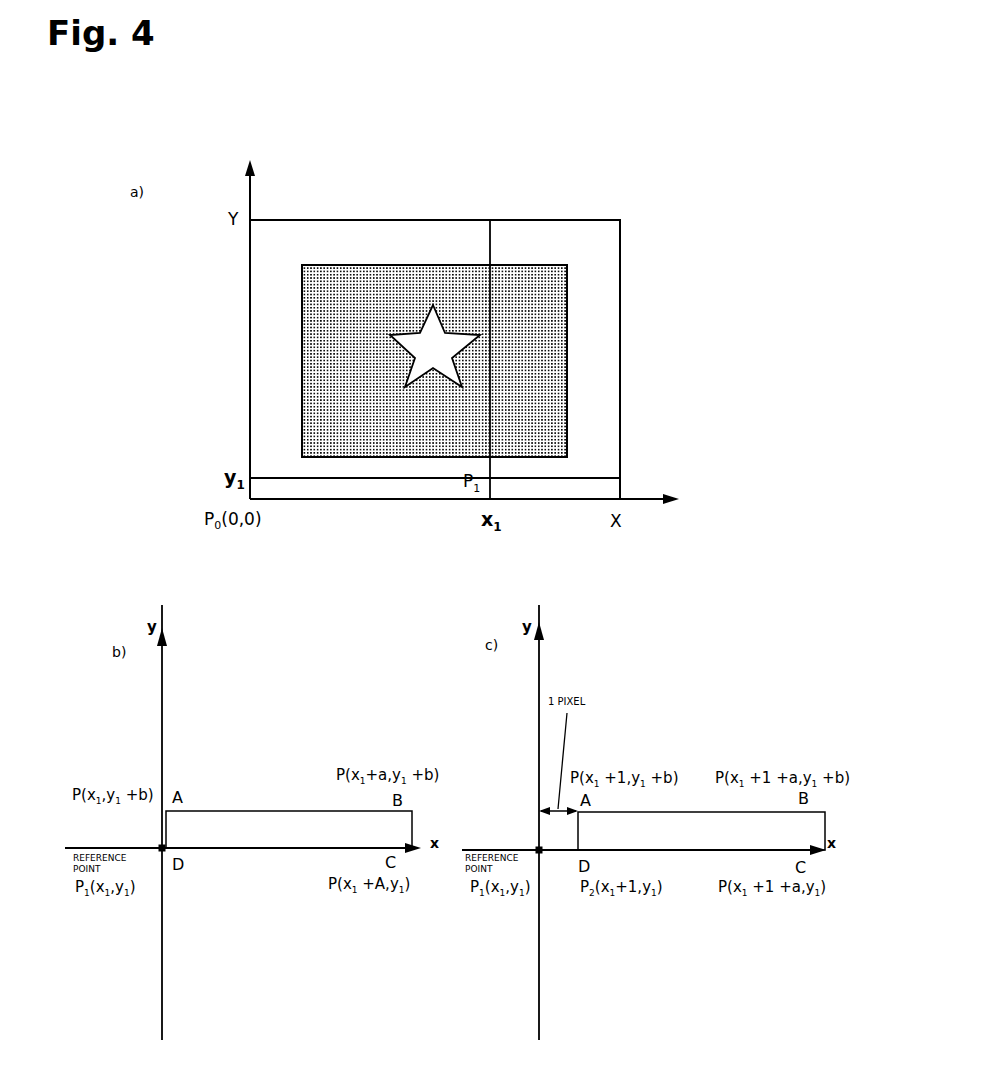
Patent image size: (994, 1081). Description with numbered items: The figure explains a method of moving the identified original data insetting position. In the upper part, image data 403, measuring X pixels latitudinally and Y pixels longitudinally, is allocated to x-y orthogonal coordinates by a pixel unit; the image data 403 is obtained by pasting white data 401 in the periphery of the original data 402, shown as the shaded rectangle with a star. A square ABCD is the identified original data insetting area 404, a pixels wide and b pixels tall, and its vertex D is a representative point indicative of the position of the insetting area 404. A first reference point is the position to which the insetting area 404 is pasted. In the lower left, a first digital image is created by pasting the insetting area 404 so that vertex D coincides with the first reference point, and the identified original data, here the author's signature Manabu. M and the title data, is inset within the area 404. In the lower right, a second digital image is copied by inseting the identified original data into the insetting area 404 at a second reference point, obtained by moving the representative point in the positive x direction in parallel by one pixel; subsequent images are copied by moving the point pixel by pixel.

The white data 401 is at (267, 258).
The original data 402 is at (540, 350).
The image data 403 is at (565, 220).
The identified original data insetting area 404 is at (593, 461).